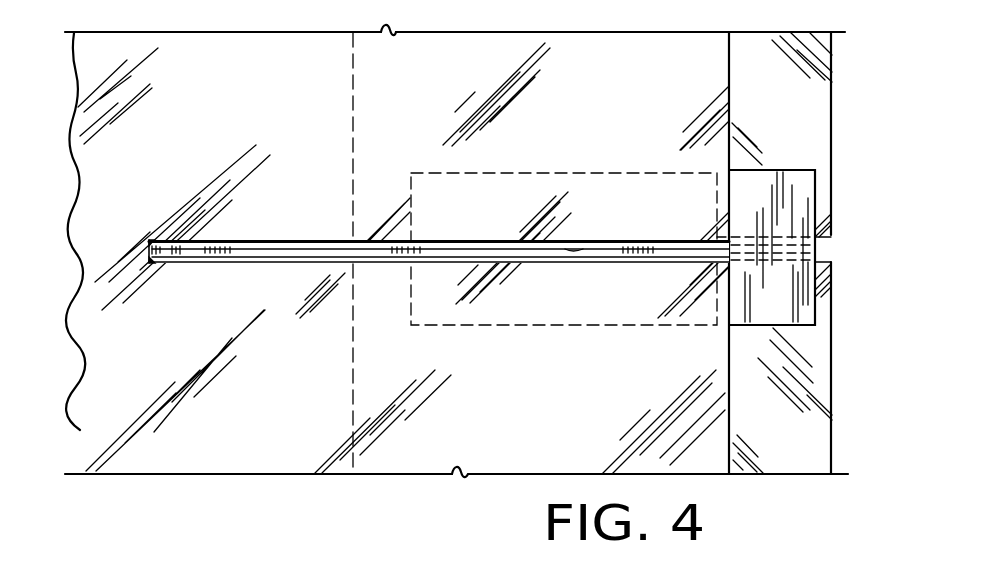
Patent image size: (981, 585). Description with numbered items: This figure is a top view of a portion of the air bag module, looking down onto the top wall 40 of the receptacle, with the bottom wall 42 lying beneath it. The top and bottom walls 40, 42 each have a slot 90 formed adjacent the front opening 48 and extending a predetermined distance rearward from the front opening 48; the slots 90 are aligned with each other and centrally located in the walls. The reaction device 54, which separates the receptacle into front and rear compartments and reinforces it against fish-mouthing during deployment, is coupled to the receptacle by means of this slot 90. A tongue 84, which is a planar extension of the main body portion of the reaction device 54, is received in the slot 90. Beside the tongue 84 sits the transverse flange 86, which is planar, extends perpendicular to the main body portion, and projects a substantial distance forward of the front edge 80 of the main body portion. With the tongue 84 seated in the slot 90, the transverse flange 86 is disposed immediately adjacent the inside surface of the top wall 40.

The top wall 40 is at (608, 68).
The bottom wall 42 is at (793, 88).
The front opening 48 is at (783, 116).
The reaction device 54 is at (282, 263).
The front edge 80 is at (575, 251).
The tongue 84 is at (313, 247).
The transverse flange 86 is at (797, 207).
The slot 90 is at (472, 241).